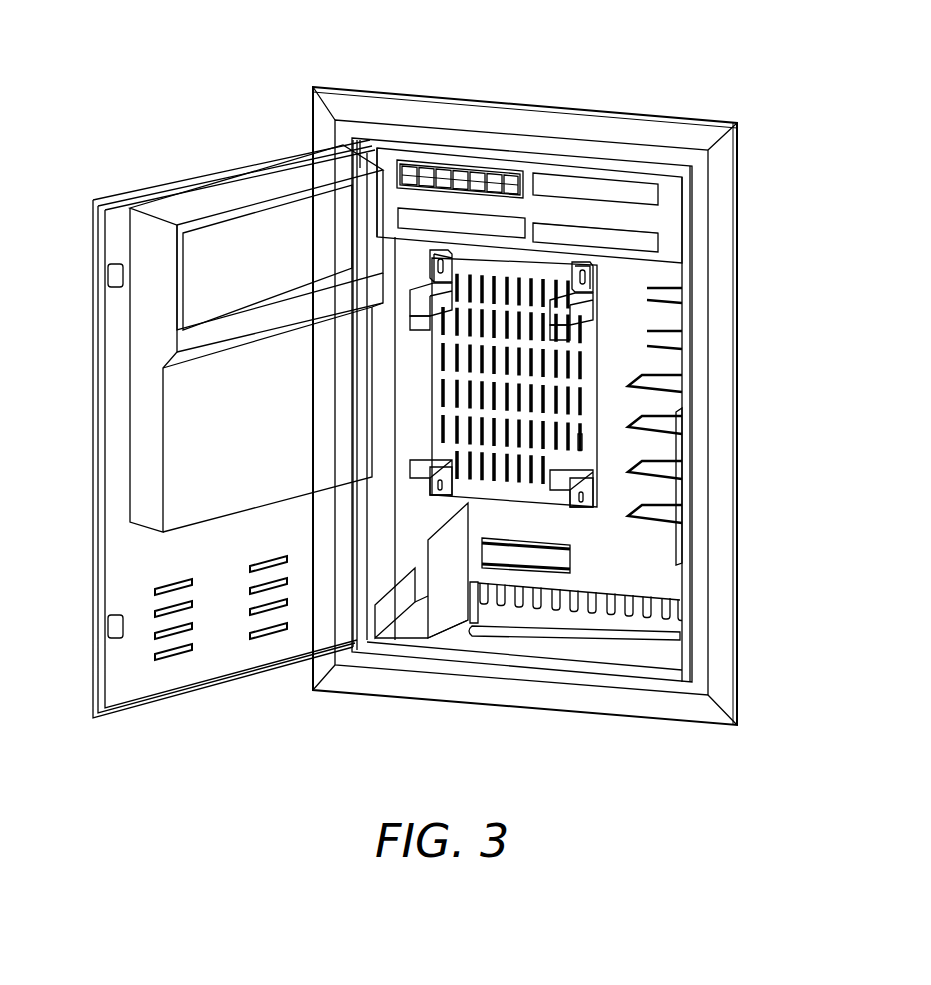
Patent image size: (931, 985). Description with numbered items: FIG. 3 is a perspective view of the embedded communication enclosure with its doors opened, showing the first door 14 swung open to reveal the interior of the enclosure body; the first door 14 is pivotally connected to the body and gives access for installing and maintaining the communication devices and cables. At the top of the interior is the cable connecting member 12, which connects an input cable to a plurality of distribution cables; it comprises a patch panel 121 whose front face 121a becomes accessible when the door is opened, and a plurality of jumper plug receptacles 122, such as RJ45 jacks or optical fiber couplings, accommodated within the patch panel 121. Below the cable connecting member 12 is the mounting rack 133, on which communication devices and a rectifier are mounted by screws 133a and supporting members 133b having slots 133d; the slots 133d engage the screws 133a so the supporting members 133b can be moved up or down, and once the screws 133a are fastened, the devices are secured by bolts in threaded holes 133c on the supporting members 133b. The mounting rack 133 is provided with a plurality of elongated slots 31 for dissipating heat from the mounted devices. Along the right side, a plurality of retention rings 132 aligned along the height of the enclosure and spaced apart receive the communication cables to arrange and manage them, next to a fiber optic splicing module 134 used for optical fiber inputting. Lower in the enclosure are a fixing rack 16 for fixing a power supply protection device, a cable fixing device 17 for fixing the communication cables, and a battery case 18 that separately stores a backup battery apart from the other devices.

The cable connecting member 12 is at (635, 35).
The patch panel 121 is at (613, 187).
The front face 121a is at (595, 216).
The jumper plug receptacles 122 is at (505, 170).
The retention rings 132 is at (677, 333).
The mounting rack 133 is at (597, 357).
The screws 133a is at (583, 272).
The supporting members 133b is at (578, 304).
The threaded holes 133c is at (565, 328).
The slots 133d is at (584, 286).
The elongated slots 31 is at (580, 442).
The fiber optic splicing module 134 is at (679, 492).
The fixing rack 16 is at (572, 560).
The cable fixing device 17 is at (598, 620).
The battery case 18 is at (410, 622).
The first door 14 is at (125, 565).